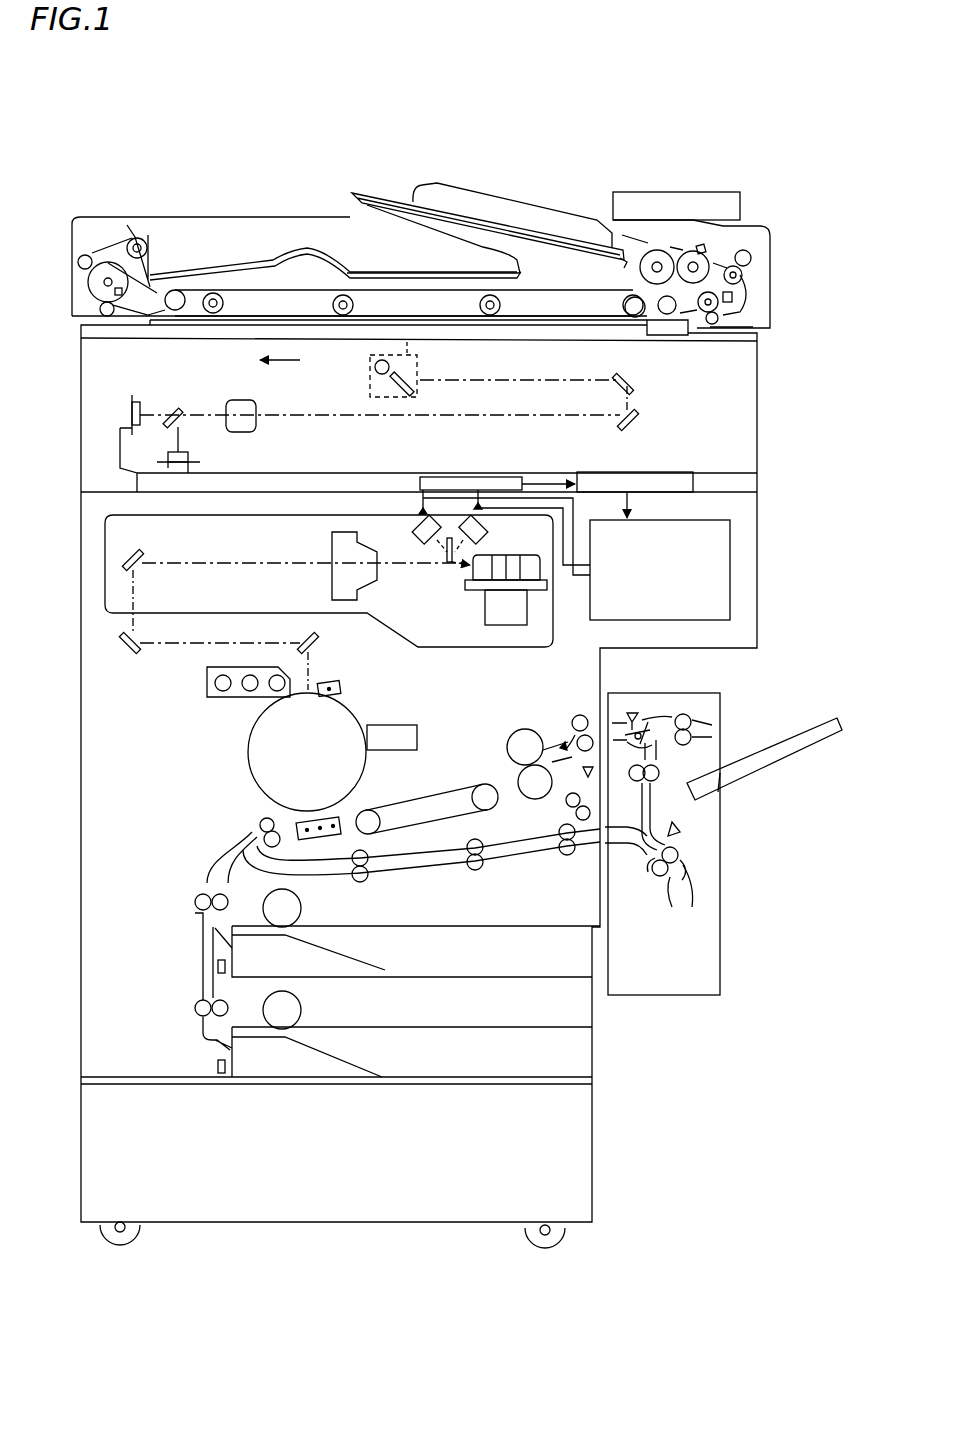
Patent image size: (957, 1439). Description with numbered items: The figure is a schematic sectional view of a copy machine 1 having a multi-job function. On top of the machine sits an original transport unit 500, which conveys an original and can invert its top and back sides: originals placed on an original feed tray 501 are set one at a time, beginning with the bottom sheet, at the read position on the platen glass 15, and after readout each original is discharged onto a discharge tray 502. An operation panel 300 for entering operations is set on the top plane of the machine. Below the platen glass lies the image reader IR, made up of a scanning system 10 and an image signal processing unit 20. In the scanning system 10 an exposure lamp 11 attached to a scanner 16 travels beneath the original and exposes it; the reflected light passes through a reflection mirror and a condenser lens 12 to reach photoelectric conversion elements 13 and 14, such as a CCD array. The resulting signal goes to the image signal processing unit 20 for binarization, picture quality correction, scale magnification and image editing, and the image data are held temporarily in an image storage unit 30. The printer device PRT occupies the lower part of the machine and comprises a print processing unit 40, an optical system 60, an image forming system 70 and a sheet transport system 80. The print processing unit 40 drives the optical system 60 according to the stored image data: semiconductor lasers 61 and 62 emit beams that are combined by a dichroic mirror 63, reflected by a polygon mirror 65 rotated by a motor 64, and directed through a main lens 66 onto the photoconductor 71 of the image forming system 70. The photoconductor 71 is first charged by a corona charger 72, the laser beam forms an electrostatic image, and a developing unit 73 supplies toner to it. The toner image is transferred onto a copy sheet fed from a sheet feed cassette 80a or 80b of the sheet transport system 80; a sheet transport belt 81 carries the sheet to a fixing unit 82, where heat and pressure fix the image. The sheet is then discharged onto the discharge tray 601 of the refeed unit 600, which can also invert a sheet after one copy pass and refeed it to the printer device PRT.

The copy machine 1 is at (104, 109).
The original transport unit 500 is at (828, 246).
The original feed tray 501 is at (483, 200).
The discharge tray 502 is at (195, 268).
The operation panel 300 is at (676, 192).
The image reader IR is at (775, 455).
The scanning system 10 is at (375, 408).
The exposure lamp 11 is at (374, 367).
The condenser lens 12 is at (255, 425).
The photoelectric conversion element 13 is at (140, 405).
The photoelectric conversion element 14 is at (190, 458).
The platen glass 15 is at (483, 326).
The scanner 16 is at (418, 362).
The image signal processing unit 20 is at (438, 477).
The image storage unit 30 is at (591, 477).
The print processing unit 40 is at (718, 540).
The optical system 60 is at (252, 530).
The semiconductor laser 61 is at (488, 538).
The semiconductor laser 62 is at (415, 522).
The dichroic mirror 63 is at (450, 560).
The motor 64 is at (507, 622).
The polygon mirror 65 is at (503, 575).
The main lens 66 is at (332, 585).
The image forming system 70 is at (415, 708).
The photoconductor 71 is at (268, 748).
The corona charger 72 is at (341, 689).
The developing unit 73 is at (207, 680).
The printer device PRT is at (822, 623).
The sheet transport system 80 is at (468, 760).
The sheet transport belt 81 is at (398, 800).
The fixing unit 82 is at (527, 790).
The sheet feed cassette 80a is at (551, 935).
The sheet feed cassette 80b is at (518, 1033).
The refeed unit 600 is at (788, 961).
The discharge tray 601 is at (800, 737).